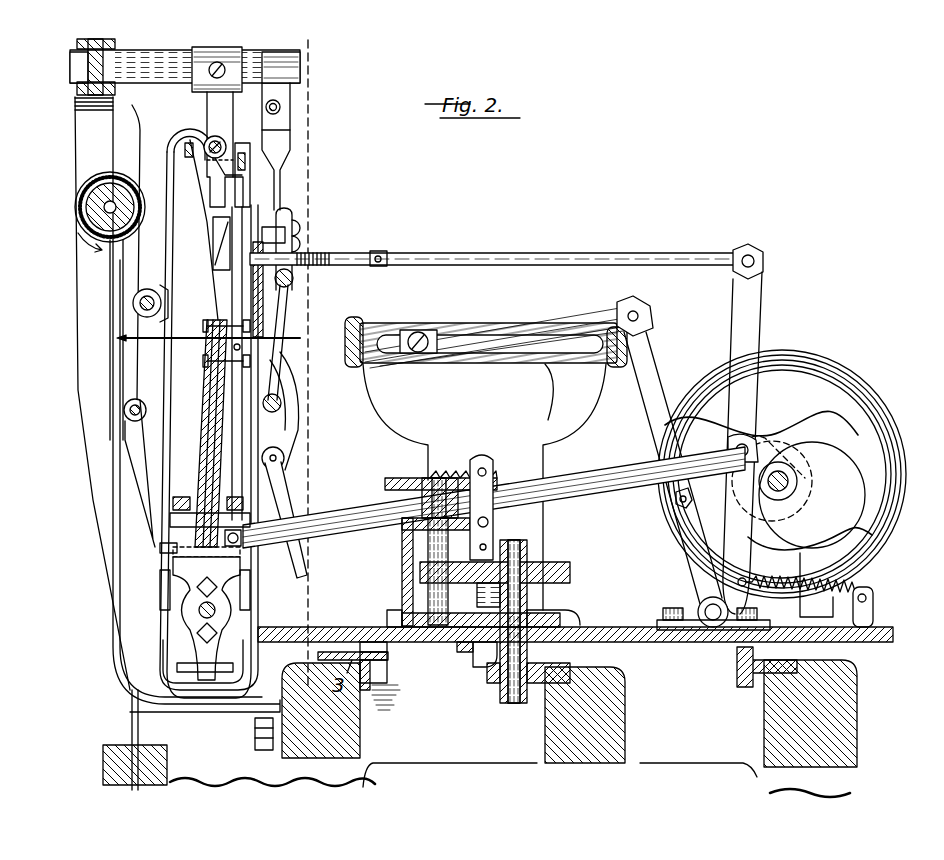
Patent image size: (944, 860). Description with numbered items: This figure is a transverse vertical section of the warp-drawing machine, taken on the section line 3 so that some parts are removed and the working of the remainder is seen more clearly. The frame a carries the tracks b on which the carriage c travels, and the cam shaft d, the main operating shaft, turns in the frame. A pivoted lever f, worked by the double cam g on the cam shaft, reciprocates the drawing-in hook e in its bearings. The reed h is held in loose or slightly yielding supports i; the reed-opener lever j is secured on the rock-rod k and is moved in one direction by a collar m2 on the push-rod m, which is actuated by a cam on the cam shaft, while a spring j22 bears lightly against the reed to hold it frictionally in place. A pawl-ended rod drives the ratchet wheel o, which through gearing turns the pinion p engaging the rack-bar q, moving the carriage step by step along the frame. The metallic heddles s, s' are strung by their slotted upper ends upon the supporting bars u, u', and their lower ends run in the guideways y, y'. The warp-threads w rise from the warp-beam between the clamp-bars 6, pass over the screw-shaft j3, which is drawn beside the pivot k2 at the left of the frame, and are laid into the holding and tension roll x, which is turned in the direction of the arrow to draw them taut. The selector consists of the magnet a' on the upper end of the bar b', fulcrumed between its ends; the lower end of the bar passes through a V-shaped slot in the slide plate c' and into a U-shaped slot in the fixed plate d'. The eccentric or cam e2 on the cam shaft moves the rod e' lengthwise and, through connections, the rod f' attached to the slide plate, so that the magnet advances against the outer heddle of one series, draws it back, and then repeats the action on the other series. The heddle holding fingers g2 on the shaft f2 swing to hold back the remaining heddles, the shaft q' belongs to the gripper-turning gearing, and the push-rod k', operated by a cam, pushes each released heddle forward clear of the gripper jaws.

The section line 3 is at (309, 352).
The clamp-bars 6 is at (167, 755).
The frame a is at (510, 760).
The magnet a' is at (204, 243).
The tracks b is at (569, 704).
The bar b' is at (201, 433).
The carriage c is at (575, 621).
The slide plate c' is at (150, 567).
The cam shaft d is at (793, 479).
The fixed plate d' is at (206, 618).
The drawing-in hook e is at (208, 335).
The rod e' is at (494, 495).
The eccentric or cam e2 is at (753, 452).
The pivoted lever f is at (664, 450).
The rod f' is at (293, 520).
The shaft f2 is at (225, 167).
The double cam g is at (847, 430).
The heddle holding fingers g2 is at (243, 183).
The reed h is at (288, 306).
The reed supports i is at (278, 207).
The reed-opener lever j is at (290, 400).
The spring j22 is at (303, 423).
The screw-shaft j3 is at (140, 300).
The rock-rod k is at (299, 460).
The push-rod k' is at (499, 247).
The pivot k2 is at (140, 303).
The push-rod m is at (572, 490).
The collar m2 is at (347, 504).
The ratchet wheel o is at (407, 477).
The pinion p is at (490, 690).
The rack-bar q is at (470, 662).
The shaft q' is at (281, 590).
The metallic heddles s is at (180, 230).
The metallic heddles s' is at (264, 265).
The heddle supporting bar u is at (201, 407).
The heddle supporting bar u' is at (273, 160).
The warp-threads w is at (138, 370).
The holding and tension roll x is at (80, 203).
The guideway y is at (154, 532).
The guideway y' is at (208, 482).